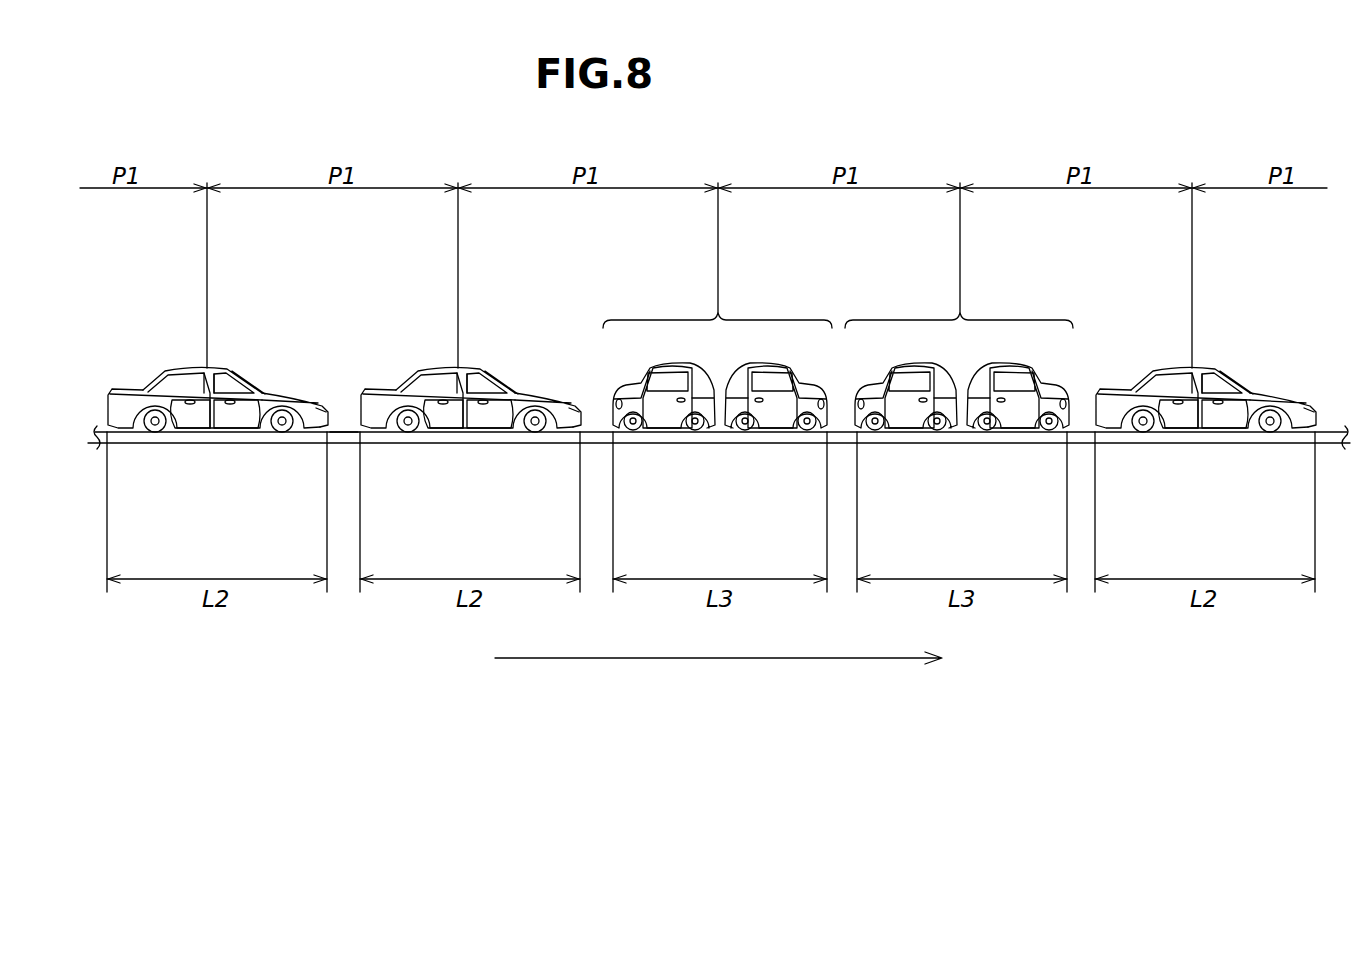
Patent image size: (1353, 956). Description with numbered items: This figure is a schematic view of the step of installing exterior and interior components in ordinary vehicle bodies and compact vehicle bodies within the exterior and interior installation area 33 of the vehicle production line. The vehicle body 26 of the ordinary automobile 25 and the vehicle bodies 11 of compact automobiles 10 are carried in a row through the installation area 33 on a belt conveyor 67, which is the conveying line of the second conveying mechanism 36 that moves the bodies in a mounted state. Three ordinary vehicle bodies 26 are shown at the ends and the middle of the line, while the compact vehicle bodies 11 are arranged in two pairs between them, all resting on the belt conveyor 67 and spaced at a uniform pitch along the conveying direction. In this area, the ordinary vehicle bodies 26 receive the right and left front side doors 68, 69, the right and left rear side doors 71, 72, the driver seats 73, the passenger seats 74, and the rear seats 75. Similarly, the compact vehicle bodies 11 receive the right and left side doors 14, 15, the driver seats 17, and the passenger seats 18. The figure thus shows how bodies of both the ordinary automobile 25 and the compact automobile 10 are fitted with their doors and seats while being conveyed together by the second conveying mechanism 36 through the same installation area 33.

The exterior and interior installation area 33 is at (916, 129).
The second conveying mechanism 36 is at (964, 461).
The belt conveyor 67 is at (345, 428).
The rear seat 75 is at (180, 367).
The driver seat 73 is at (746, 368).
The passenger seat 74 is at (222, 374).
The ordinary automobile 25 is at (804, 342).
The vehicle body of the ordinary automobile 26 is at (300, 395).
The right rear side door 71 is at (675, 446).
The left rear side door 72 is at (191, 418).
The right front side door 68 is at (758, 468).
The left front side door 69 is at (247, 418).
The compact automobile 10 is at (825, 332).
The vehicle body of the compact automobile 11 is at (838, 320).
The right side door 14 is at (772, 424).
The left side door 15 is at (667, 424).
The driver seat 17 is at (758, 387).
The passenger seat 18 is at (686, 386).